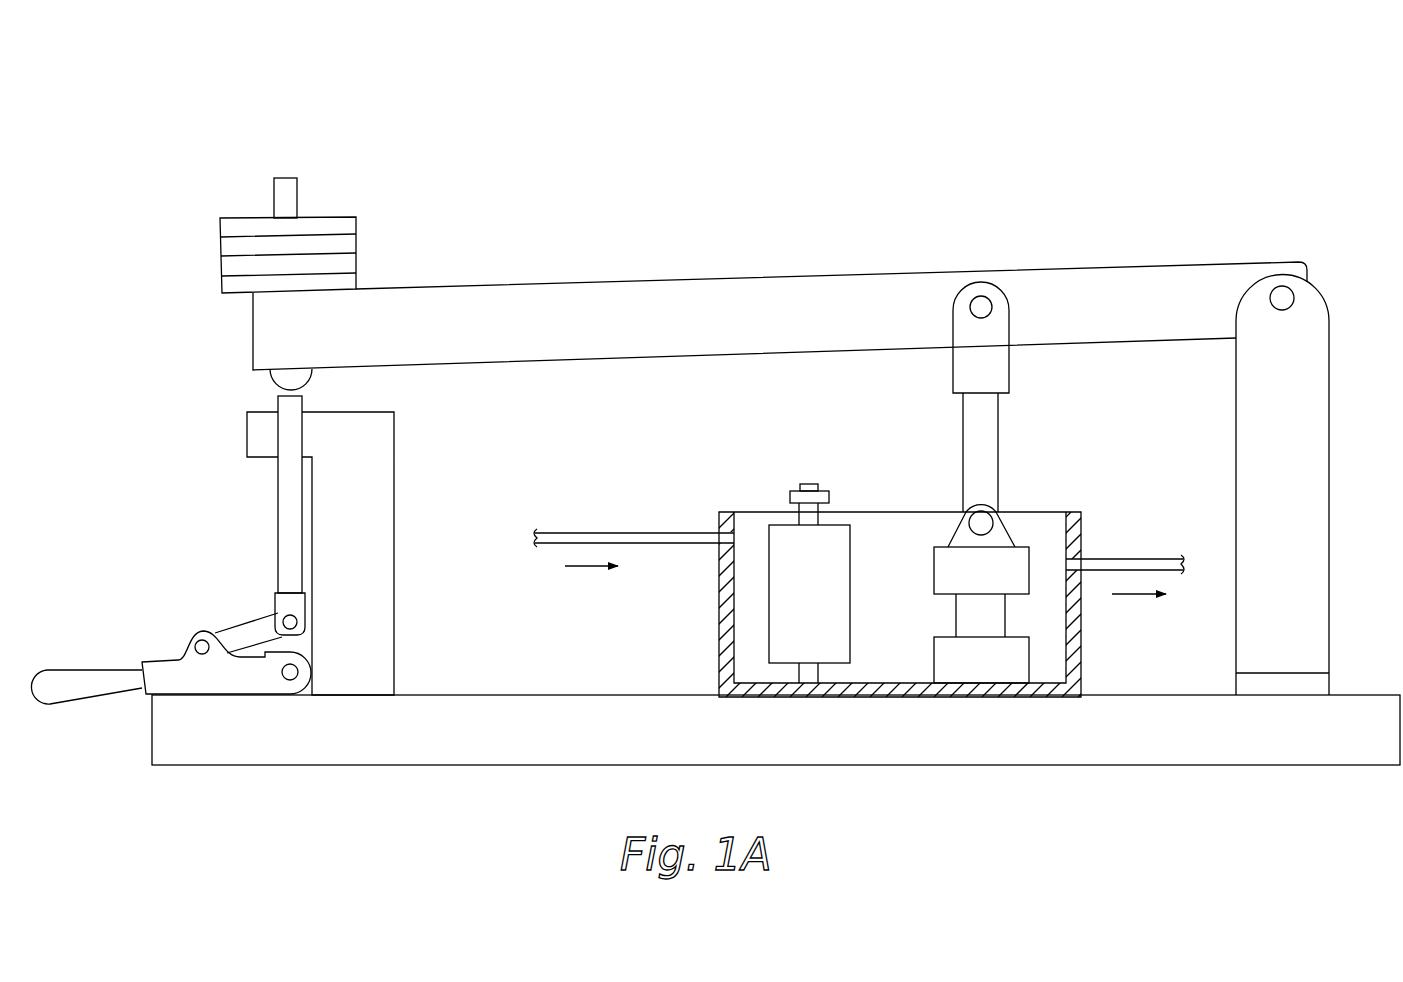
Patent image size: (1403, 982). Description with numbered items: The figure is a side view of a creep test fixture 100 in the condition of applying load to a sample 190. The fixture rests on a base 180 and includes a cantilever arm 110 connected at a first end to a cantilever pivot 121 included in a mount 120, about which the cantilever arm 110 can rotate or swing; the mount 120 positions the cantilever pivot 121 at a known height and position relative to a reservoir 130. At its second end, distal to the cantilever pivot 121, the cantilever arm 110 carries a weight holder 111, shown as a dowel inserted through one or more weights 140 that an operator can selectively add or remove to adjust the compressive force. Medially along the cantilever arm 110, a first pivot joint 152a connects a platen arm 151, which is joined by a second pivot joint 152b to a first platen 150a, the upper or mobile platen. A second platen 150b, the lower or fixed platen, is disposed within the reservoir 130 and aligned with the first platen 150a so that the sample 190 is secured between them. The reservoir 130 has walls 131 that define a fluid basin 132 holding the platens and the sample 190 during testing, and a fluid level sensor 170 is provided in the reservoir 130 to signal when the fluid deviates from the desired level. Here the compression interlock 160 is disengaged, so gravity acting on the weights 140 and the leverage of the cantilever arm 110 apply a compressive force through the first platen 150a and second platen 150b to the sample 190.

The creep test fixture 100 is at (1202, 66).
The cantilever arm 110 is at (776, 275).
The weight holder 111 is at (290, 178).
The mount 120 is at (1318, 449).
The cantilever pivot 121 is at (1282, 298).
The reservoir 130 is at (898, 578).
The walls 131 is at (719, 630).
The fluid basin 132 is at (875, 537).
The weights 140 is at (241, 208).
The first platen 150a is at (987, 527).
The second platen 150b is at (948, 658).
The platen arm 151 is at (951, 362).
The first pivot joint 152a is at (981, 300).
The second pivot joint 152b is at (982, 522).
The compression interlock 160 is at (198, 582).
The fluid level sensor 170 is at (785, 598).
The base 180 is at (562, 695).
The sample 190 is at (973, 611).